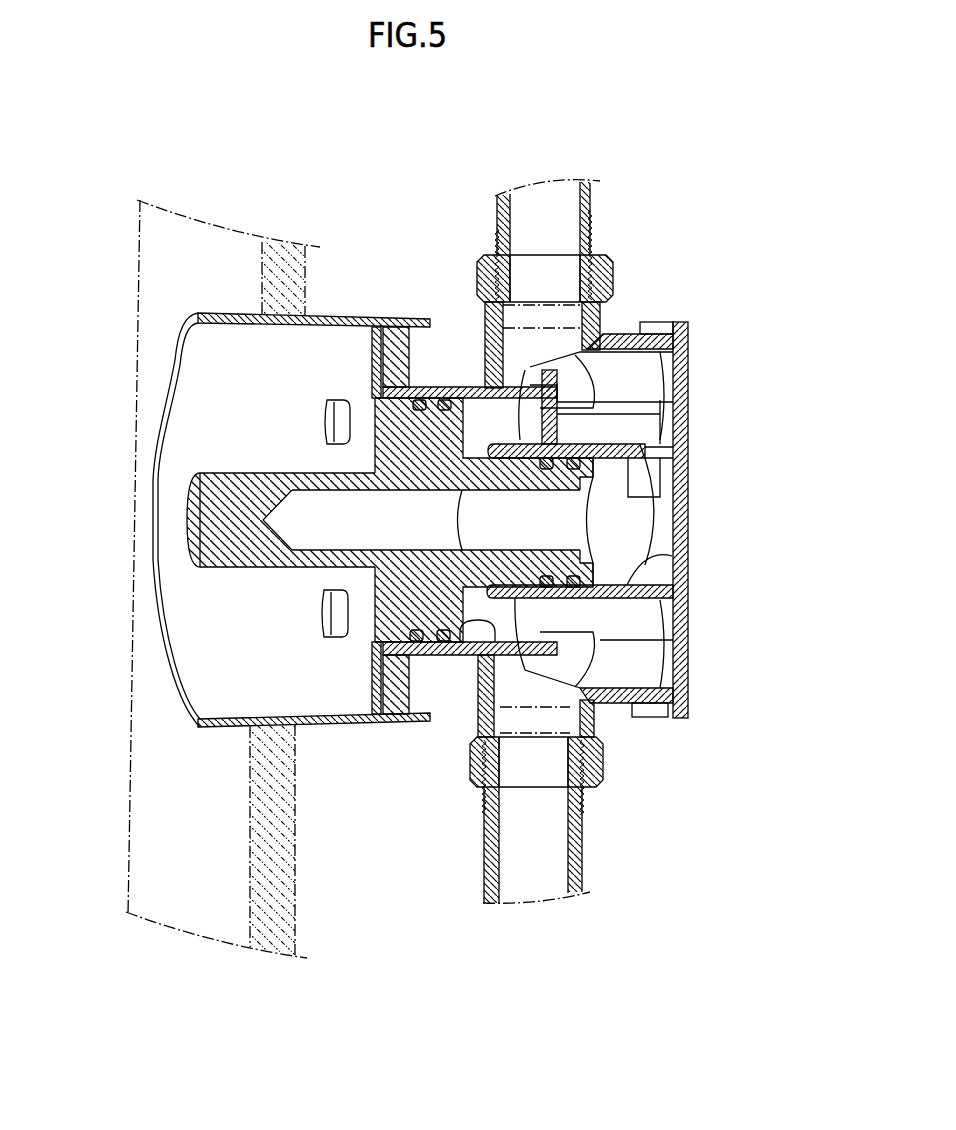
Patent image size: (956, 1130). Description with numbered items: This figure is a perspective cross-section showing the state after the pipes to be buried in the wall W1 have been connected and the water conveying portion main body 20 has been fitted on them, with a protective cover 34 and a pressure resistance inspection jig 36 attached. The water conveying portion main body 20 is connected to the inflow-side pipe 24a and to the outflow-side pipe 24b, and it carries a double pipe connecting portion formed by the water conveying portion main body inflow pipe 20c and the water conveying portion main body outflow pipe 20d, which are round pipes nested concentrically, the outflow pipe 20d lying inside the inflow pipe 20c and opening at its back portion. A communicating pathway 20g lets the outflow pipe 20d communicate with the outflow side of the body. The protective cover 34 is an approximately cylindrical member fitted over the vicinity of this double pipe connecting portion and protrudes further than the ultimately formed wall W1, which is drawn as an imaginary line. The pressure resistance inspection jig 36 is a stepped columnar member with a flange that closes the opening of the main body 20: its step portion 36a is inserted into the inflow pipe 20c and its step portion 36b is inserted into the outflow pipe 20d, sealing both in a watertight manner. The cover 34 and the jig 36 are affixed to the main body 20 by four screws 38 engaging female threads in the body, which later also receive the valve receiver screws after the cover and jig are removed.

The wall W1 is at (154, 862).
The protective cover 34 is at (218, 730).
The pressure resistance inspection jig 36 is at (214, 566).
The step portion 36a is at (408, 397).
The step portion 36b is at (543, 445).
The screw 38 is at (328, 428).
The water conveying portion main body 20 is at (687, 674).
The water conveying portion main body inflow pipe 20c is at (468, 622).
The water conveying portion main body outflow pipe 20d is at (660, 585).
The communicating pathway 20g is at (655, 457).
The inflow-side pipe 24a is at (578, 862).
The outflow-side pipe 24b is at (584, 203).